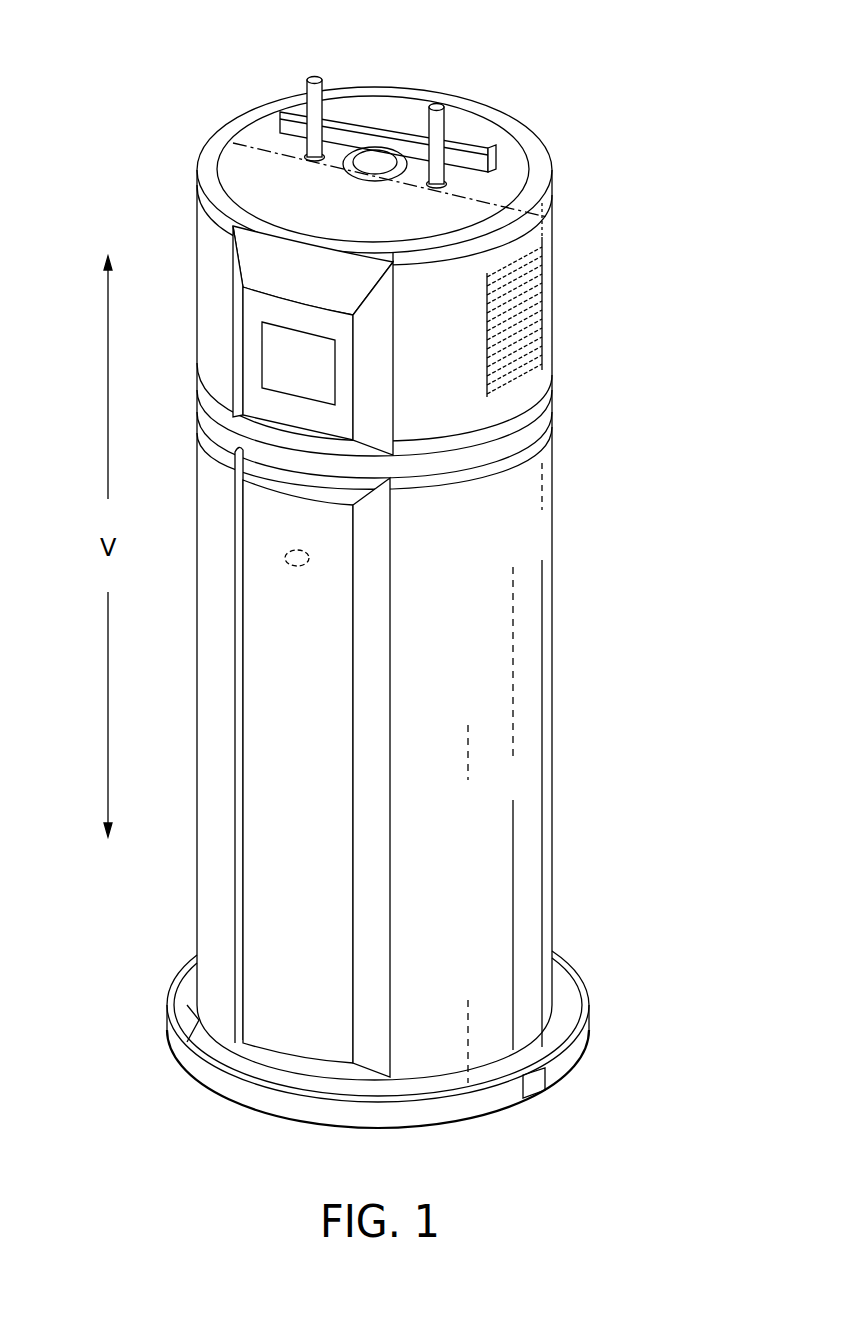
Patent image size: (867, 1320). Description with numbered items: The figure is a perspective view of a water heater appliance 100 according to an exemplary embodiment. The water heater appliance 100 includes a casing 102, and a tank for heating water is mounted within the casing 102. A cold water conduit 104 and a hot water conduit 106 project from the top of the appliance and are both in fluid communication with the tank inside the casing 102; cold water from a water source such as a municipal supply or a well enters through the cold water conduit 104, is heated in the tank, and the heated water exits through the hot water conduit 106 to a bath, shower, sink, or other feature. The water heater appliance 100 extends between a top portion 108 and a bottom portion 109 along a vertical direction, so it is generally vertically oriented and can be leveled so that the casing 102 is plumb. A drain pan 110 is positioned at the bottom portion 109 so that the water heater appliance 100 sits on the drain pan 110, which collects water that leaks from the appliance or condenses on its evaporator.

The water heater appliance 100 is at (382, 579).
The casing 102 is at (527, 538).
The cold water conduit 104 is at (306, 88).
The hot water conduit 106 is at (446, 127).
The top portion 108 is at (176, 168).
The bottom portion 109 is at (148, 988).
The drain pan 110 is at (610, 1000).